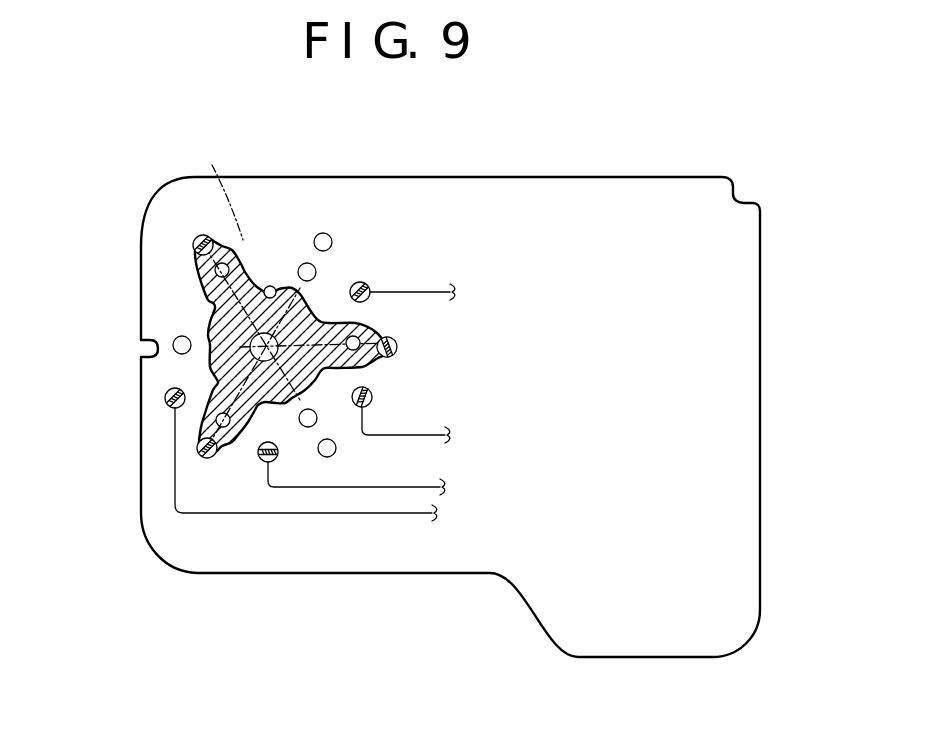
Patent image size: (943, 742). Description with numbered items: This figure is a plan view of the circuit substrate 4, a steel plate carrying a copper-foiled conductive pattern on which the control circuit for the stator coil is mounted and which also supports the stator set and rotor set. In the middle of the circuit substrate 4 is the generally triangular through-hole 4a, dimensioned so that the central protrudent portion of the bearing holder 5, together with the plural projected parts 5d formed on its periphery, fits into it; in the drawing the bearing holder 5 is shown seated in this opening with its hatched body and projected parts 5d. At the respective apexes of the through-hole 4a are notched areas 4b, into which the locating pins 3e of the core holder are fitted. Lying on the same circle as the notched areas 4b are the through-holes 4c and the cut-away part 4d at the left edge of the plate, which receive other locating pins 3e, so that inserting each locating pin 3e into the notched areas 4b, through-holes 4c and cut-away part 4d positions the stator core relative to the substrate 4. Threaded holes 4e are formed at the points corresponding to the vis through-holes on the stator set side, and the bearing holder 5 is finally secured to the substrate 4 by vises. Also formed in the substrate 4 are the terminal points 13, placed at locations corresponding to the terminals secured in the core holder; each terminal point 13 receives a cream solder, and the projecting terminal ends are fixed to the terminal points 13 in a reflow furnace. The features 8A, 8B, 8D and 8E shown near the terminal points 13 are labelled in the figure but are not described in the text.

The circuit substrate 4 is at (664, 168).
The through-hole 4a is at (264, 286).
The notched areas 4b is at (398, 333).
The through-holes 4c is at (329, 235).
The cut-away part 4d is at (149, 341).
The threaded holes 4e is at (302, 264).
The bearing holder 5 is at (213, 363).
The projected parts 5d is at (218, 184).
The locating pins 3e is at (197, 237).
The pin 8A is at (168, 404).
The pin 8B is at (260, 461).
The pin 8D is at (360, 282).
The pin 8E is at (369, 392).
The terminal points 13 is at (366, 285).